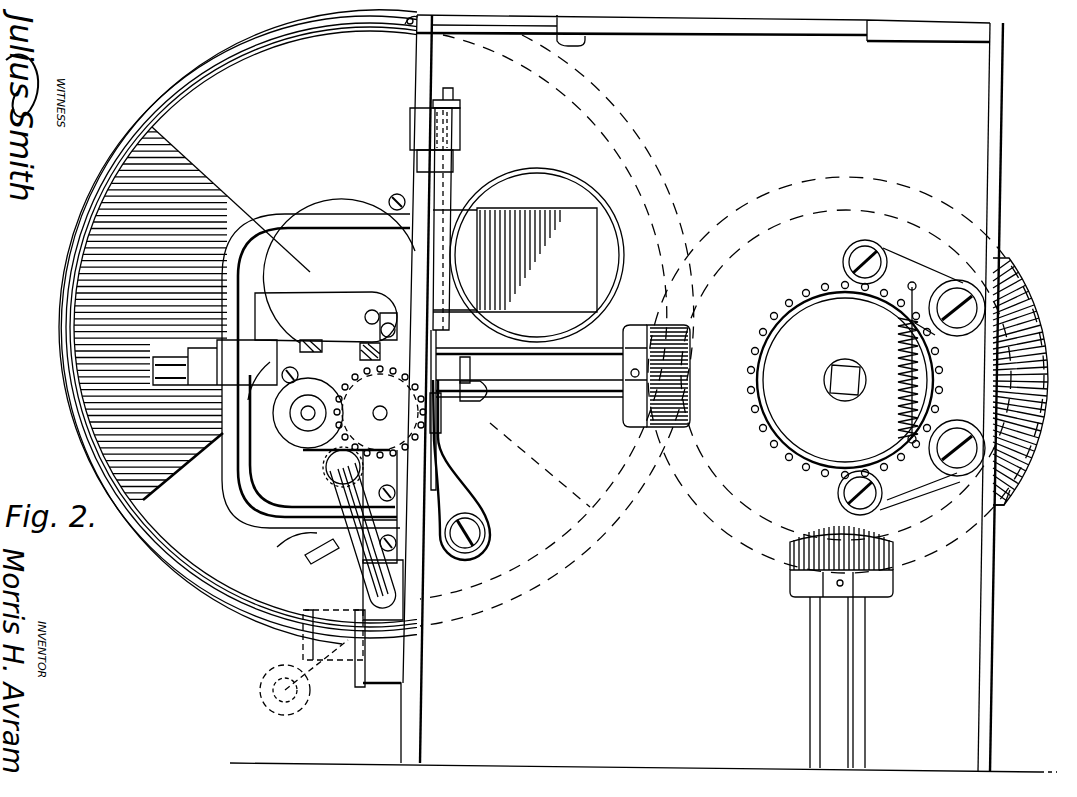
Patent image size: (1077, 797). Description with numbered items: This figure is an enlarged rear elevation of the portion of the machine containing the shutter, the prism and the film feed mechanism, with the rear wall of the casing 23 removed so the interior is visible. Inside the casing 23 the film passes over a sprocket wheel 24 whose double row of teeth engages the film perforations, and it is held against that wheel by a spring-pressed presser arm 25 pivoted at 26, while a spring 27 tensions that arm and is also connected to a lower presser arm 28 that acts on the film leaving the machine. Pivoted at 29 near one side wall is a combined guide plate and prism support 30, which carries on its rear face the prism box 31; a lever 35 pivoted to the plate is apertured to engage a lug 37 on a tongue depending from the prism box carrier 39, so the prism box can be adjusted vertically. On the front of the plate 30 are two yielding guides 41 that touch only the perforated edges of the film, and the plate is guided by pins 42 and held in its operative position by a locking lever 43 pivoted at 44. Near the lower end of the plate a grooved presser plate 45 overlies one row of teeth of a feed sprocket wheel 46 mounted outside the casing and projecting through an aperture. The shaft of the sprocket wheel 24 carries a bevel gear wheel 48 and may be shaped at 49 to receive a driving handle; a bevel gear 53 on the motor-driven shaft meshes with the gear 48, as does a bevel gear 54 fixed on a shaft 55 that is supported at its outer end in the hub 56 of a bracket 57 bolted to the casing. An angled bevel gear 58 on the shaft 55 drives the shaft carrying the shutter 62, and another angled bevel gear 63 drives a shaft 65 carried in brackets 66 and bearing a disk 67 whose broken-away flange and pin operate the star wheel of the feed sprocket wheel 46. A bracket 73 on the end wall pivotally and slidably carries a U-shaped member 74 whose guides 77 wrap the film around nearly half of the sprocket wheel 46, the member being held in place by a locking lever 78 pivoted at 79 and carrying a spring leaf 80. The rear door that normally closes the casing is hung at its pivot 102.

The casing 23 is at (1001, 96).
The sprocket wheel 24 is at (792, 333).
The presser arm 25 is at (855, 259).
The pivot 26 is at (970, 318).
The spring 27 is at (896, 334).
The lower presser arm 28 is at (838, 493).
The pivot 29 is at (472, 528).
The combined guide plate and prism support 30 is at (440, 437).
The prism box 31 is at (566, 222).
The lever 35 is at (490, 394).
The lug 37 is at (472, 376).
The prism box carrier 39 is at (446, 188).
The yielding guides 41 is at (420, 152).
The pins 42 is at (462, 101).
The locking lever 43 is at (420, 125).
The pivot 44 is at (408, 25).
The presser plate 45 is at (436, 404).
The feed sprocket wheel 46 is at (380, 478).
The bevel gear wheel 48 is at (1003, 482).
The shaped shaft end 49 is at (843, 387).
The bevel gear 53 is at (853, 568).
The bevel gear 54 is at (688, 372).
The shaft 55 is at (625, 404).
The hub 56 is at (215, 362).
The bracket 57 is at (306, 216).
The angled bevel gear 58 is at (342, 344).
The shutter 62 is at (160, 468).
The angled bevel gear 63 is at (303, 342).
The shaft 65 is at (315, 413).
The brackets 66 is at (310, 446).
The disk 67 is at (247, 452).
The bracket 73 is at (432, 592).
The U-shaped member 74 is at (386, 576).
The guides 77 is at (282, 551).
The locking lever 78 is at (300, 594).
The pivot 79 is at (355, 650).
The spring leaf 80 is at (338, 570).
The door pivot 102 is at (565, 40).